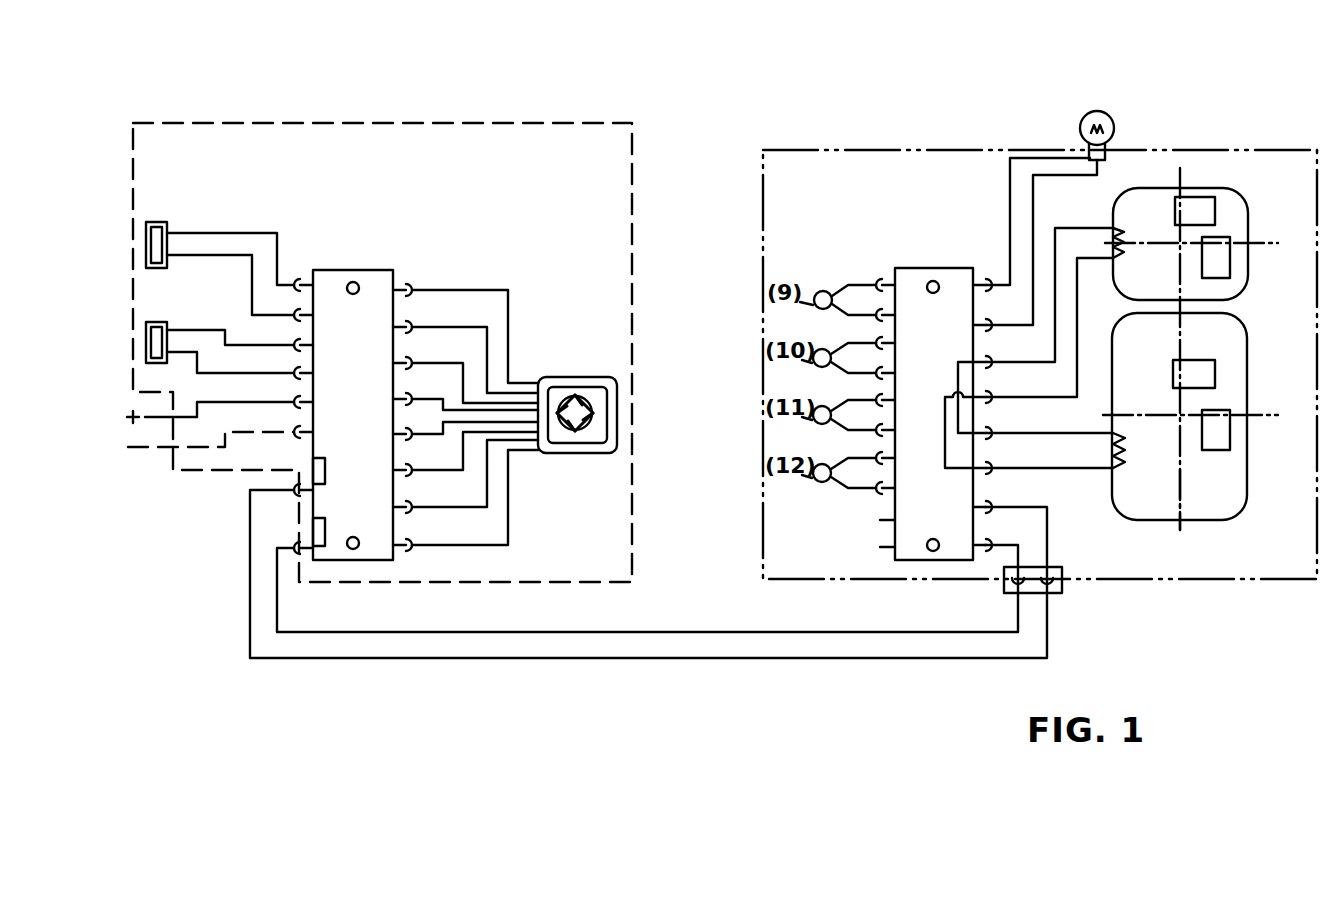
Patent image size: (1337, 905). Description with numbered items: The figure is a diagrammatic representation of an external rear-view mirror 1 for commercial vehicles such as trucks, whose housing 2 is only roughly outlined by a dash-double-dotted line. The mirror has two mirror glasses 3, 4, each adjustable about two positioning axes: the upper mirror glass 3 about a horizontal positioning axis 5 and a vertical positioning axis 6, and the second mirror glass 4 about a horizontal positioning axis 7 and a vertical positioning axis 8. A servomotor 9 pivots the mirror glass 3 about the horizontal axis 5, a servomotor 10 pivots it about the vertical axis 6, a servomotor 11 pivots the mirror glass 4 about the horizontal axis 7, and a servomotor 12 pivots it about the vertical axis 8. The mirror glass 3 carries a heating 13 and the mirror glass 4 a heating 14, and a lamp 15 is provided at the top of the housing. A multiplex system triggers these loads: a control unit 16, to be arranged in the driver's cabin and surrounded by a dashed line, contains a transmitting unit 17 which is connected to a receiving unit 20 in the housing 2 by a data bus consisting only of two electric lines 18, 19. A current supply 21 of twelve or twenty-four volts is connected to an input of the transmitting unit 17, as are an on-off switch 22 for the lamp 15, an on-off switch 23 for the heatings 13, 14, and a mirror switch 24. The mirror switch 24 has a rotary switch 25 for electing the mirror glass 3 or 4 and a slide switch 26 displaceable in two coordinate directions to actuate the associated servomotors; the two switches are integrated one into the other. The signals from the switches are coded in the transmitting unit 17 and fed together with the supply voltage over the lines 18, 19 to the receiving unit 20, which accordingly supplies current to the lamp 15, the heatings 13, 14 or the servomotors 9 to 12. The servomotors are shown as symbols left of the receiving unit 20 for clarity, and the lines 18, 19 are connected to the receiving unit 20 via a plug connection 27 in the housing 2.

The external rear-view mirror 1 is at (1210, 143).
The housing 2 is at (815, 148).
The mirror glass 3 is at (1155, 220).
The mirror glass 4 is at (1148, 365).
The horizontal positioning axis 5 is at (1268, 243).
The vertical positioning axis 6 is at (1180, 173).
The horizontal positioning axis 7 is at (1268, 415).
The vertical positioning axis 8 is at (1183, 470).
The servomotor 9 is at (1205, 213).
The servomotor 10 is at (1222, 272).
The servomotor 11 is at (1205, 378).
The servomotor 12 is at (1222, 443).
The heating 13 is at (1123, 250).
The heating 14 is at (1125, 453).
The lamp 15 is at (1080, 126).
The control unit 16 is at (527, 121).
The transmitting unit 17 is at (365, 393).
The electric line 18 is at (700, 658).
The electric line 19 is at (693, 632).
The receiving unit 20 is at (948, 337).
The current supply 21 is at (133, 433).
The on-off switch 22 is at (157, 347).
The on-off switch 23 is at (157, 243).
The mirror switch 24 is at (573, 419).
The rotary switch 25 is at (567, 400).
The slide switch 26 is at (598, 415).
The plug connection 27 is at (1055, 593).